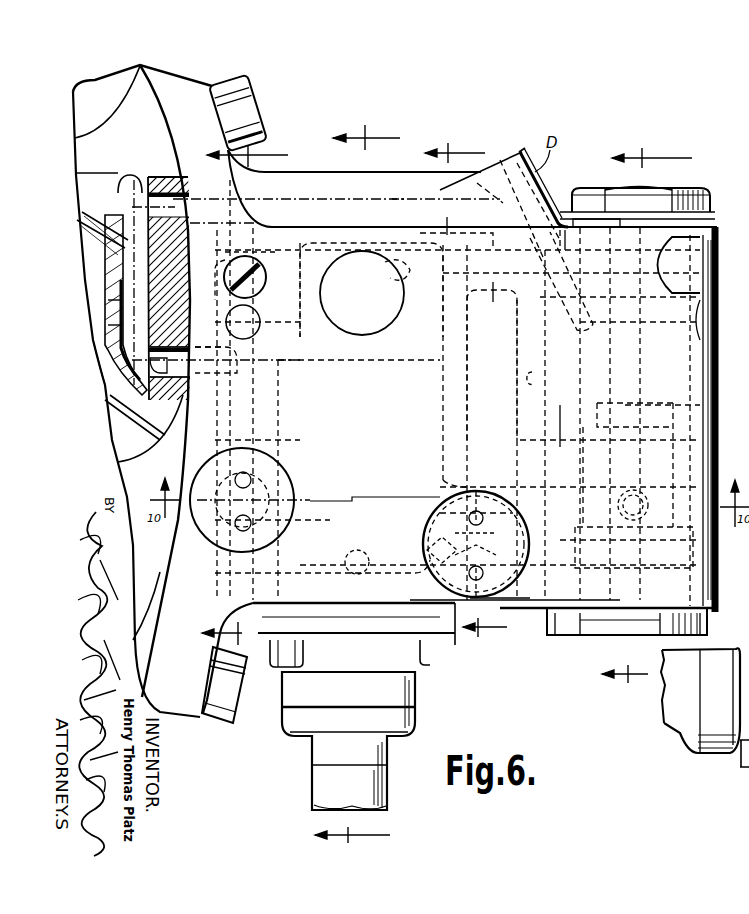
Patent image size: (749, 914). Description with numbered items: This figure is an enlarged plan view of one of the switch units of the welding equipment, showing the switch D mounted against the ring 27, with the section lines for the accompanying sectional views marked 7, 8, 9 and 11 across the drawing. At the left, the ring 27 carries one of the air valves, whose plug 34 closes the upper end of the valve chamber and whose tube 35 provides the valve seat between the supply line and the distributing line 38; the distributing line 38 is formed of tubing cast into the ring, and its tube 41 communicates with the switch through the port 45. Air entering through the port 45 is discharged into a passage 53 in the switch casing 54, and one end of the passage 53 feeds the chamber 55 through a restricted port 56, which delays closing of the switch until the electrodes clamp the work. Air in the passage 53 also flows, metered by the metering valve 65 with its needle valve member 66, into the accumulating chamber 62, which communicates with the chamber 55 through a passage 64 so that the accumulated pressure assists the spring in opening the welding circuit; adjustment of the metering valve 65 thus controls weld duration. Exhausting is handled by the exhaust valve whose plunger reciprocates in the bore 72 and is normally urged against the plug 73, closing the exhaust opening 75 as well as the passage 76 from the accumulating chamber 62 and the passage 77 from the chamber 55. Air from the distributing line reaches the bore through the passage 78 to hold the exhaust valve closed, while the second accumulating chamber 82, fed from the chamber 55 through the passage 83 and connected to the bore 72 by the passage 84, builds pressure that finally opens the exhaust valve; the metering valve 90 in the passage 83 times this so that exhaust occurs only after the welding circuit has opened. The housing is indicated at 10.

The housing 10 is at (673, 478).
The ring 27 is at (167, 247).
The plug 34 is at (100, 372).
The tube 35 is at (104, 228).
The distributing line 38 is at (108, 308).
The tube 41 is at (108, 334).
The port 45 is at (157, 392).
The passage 53 is at (253, 403).
The switch casing 54 is at (298, 170).
The chamber 55 is at (310, 243).
The restricted port 56 is at (268, 292).
The accumulating chamber 62 is at (433, 350).
The passage 64 is at (350, 552).
The metering valve 65 is at (278, 470).
The needle valve member 66 is at (660, 181).
The bore 72 is at (715, 437).
The plug 73 is at (572, 628).
The exhaust opening 75 is at (717, 517).
The passage 76 is at (572, 460).
The passage 77 is at (533, 292).
The passage 78 is at (398, 193).
The second accumulating chamber 82 is at (532, 379).
The passage 83 is at (440, 552).
The passage 84 is at (476, 544).
The metering valve 90 is at (500, 615).
The section line 7- 7 is at (245, 397).
The section line 8-8 / cylinder 8 is at (348, 486).
The section line 9- 9 is at (647, 418).
The section line 11- 11 is at (466, 393).